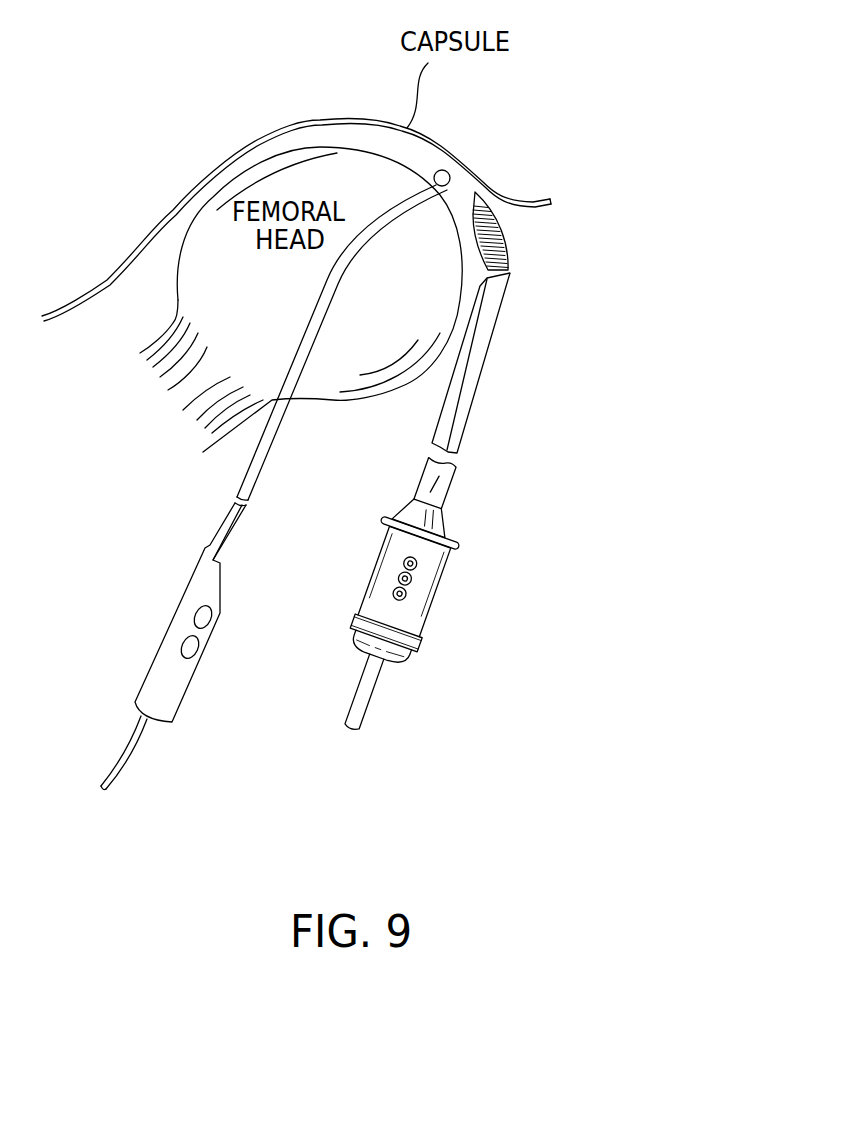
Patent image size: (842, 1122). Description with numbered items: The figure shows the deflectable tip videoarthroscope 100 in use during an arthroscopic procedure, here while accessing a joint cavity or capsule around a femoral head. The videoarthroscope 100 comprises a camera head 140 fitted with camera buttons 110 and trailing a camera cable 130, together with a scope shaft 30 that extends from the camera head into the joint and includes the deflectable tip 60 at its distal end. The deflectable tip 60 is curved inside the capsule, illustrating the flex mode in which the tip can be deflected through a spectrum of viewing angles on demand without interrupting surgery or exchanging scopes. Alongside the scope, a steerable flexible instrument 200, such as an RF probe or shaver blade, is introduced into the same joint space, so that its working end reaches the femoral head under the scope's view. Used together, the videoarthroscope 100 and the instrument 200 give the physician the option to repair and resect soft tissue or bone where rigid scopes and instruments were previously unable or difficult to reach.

The scope shaft 30 is at (458, 407).
The deflectable tip 60 is at (508, 234).
The deflectable tip videoarthroscope 100 is at (485, 461).
The camera buttons 110 is at (409, 592).
The camera cable 130 is at (363, 702).
The camera head 140 is at (427, 613).
The steerable flexible RF probes, shaver blades instruments 200 is at (180, 560).